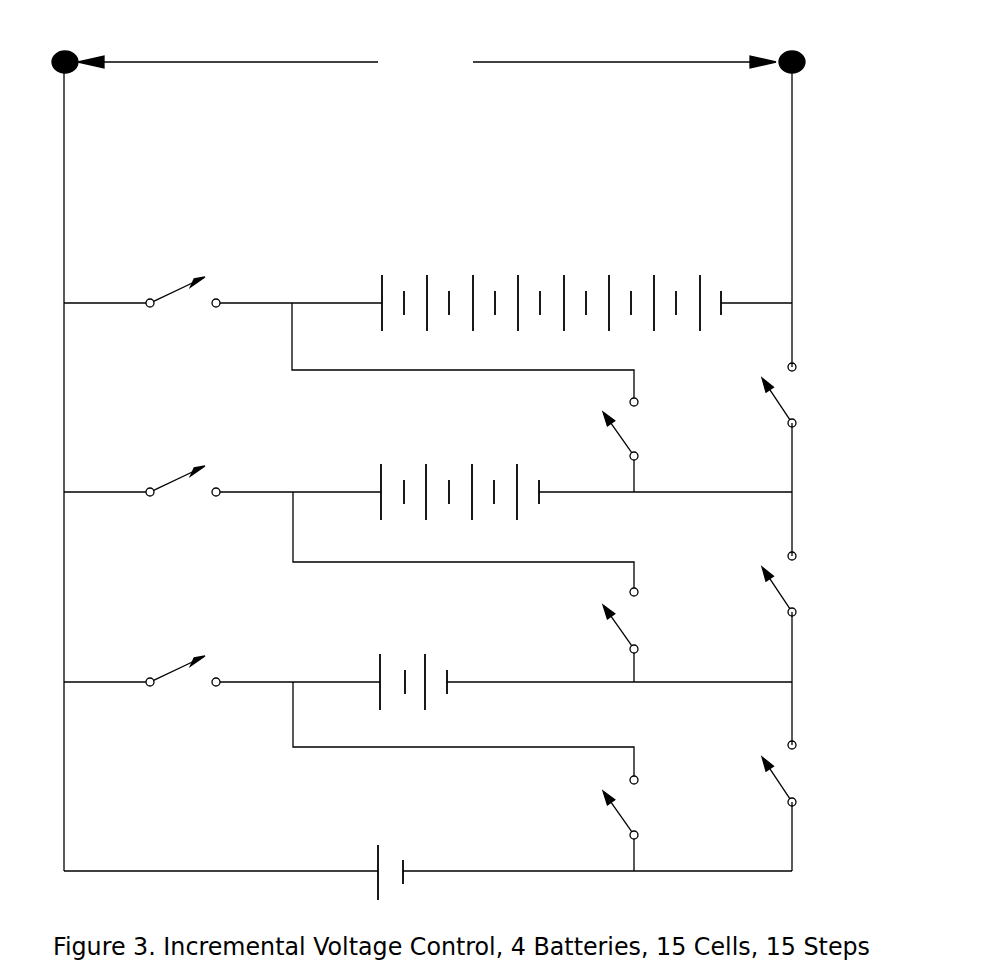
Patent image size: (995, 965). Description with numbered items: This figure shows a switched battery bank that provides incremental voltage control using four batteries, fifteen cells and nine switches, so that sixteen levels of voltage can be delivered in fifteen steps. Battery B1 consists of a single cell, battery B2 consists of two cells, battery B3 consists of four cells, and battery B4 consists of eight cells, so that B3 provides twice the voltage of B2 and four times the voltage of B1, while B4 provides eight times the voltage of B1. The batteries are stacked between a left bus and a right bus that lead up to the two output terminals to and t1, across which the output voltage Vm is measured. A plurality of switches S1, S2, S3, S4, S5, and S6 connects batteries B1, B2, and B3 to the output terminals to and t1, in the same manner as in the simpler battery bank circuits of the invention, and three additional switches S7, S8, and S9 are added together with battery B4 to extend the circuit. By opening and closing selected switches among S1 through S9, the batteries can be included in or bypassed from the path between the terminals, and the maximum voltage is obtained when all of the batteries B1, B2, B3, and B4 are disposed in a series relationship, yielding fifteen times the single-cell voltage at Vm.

The output terminal to is at (65, 41).
The output terminal t1 is at (788, 41).
The measured output voltage Vm is at (427, 62).
The battery B1 is at (395, 850).
The battery B2 is at (411, 662).
The battery B3 is at (458, 469).
The battery B4 is at (549, 283).
The switch S1 is at (581, 807).
The switch S2 is at (818, 773).
The switch S3 is at (183, 707).
The switch S4 is at (586, 620).
The switch S5 is at (823, 584).
The switch S6 is at (183, 517).
The switch S7 is at (592, 429).
The switch S8 is at (824, 395).
The switch S9 is at (182, 328).